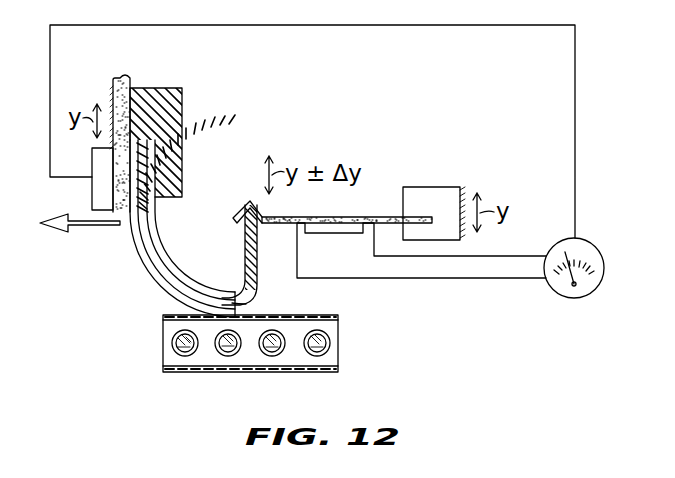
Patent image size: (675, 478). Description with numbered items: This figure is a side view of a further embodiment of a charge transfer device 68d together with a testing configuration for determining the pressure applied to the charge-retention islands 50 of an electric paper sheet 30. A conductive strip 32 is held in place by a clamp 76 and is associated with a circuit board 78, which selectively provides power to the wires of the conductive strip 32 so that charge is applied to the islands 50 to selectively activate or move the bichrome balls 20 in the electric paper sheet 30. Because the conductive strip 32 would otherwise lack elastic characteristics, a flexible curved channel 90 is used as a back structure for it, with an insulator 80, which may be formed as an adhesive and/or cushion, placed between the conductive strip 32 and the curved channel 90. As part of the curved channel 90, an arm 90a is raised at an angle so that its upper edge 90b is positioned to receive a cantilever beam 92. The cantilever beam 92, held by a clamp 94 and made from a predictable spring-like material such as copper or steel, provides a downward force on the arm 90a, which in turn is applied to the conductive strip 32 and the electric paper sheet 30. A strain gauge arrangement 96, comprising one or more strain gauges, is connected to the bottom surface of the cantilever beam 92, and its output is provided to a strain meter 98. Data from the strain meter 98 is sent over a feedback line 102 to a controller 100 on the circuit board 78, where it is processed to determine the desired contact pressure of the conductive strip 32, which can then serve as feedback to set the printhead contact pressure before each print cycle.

The bichrome balls 20 is at (170, 341).
The electric paper sheet 30 is at (133, 327).
The conductive strip 32 is at (136, 246).
The islands 50 is at (305, 318).
The charge transfer device 68d is at (333, 111).
The clamp 76 is at (183, 135).
The circuit board 78 is at (132, 82).
The insulator 80 is at (238, 306).
The curved channel 90 is at (210, 239).
The arm 90a is at (244, 255).
The upper edge 90b is at (250, 204).
The cantilever beam 92 is at (342, 218).
The clamp 94 is at (432, 187).
The strain gauge arrangement 96 is at (332, 233).
The strain meter 98 is at (590, 242).
The controller 100 is at (92, 196).
The feedback line 102 is at (432, 26).